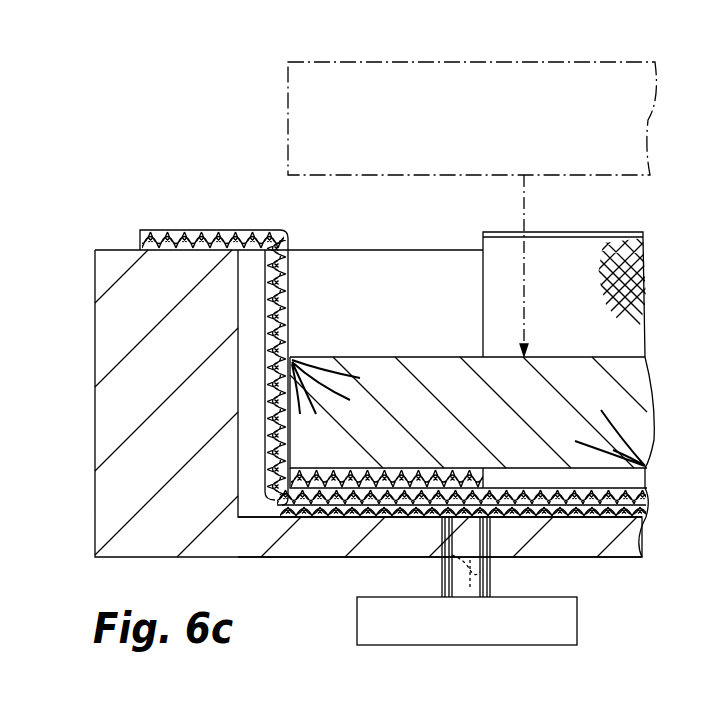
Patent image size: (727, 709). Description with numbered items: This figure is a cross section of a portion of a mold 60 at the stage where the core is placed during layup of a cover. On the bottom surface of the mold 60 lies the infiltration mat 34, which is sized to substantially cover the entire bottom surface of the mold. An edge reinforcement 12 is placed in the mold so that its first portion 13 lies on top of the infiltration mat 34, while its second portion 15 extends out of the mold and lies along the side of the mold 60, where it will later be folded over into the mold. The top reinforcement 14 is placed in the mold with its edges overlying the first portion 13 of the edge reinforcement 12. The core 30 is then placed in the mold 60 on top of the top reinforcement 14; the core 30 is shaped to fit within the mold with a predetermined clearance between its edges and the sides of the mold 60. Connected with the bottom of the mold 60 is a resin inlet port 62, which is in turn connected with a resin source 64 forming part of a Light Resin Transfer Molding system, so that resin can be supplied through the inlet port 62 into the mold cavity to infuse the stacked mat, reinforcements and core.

The mold 60 is at (120, 248).
The infiltration mat 34 is at (317, 558).
The second portion of edge reinforcement 15 is at (200, 230).
The edge reinforcement 12 is at (290, 276).
The core 30 is at (608, 58).
The first portion of edge reinforcement 13 is at (370, 486).
The top reinforcement 14 is at (527, 497).
The resin inlet port 62 is at (490, 582).
The resin source 64 is at (579, 627).